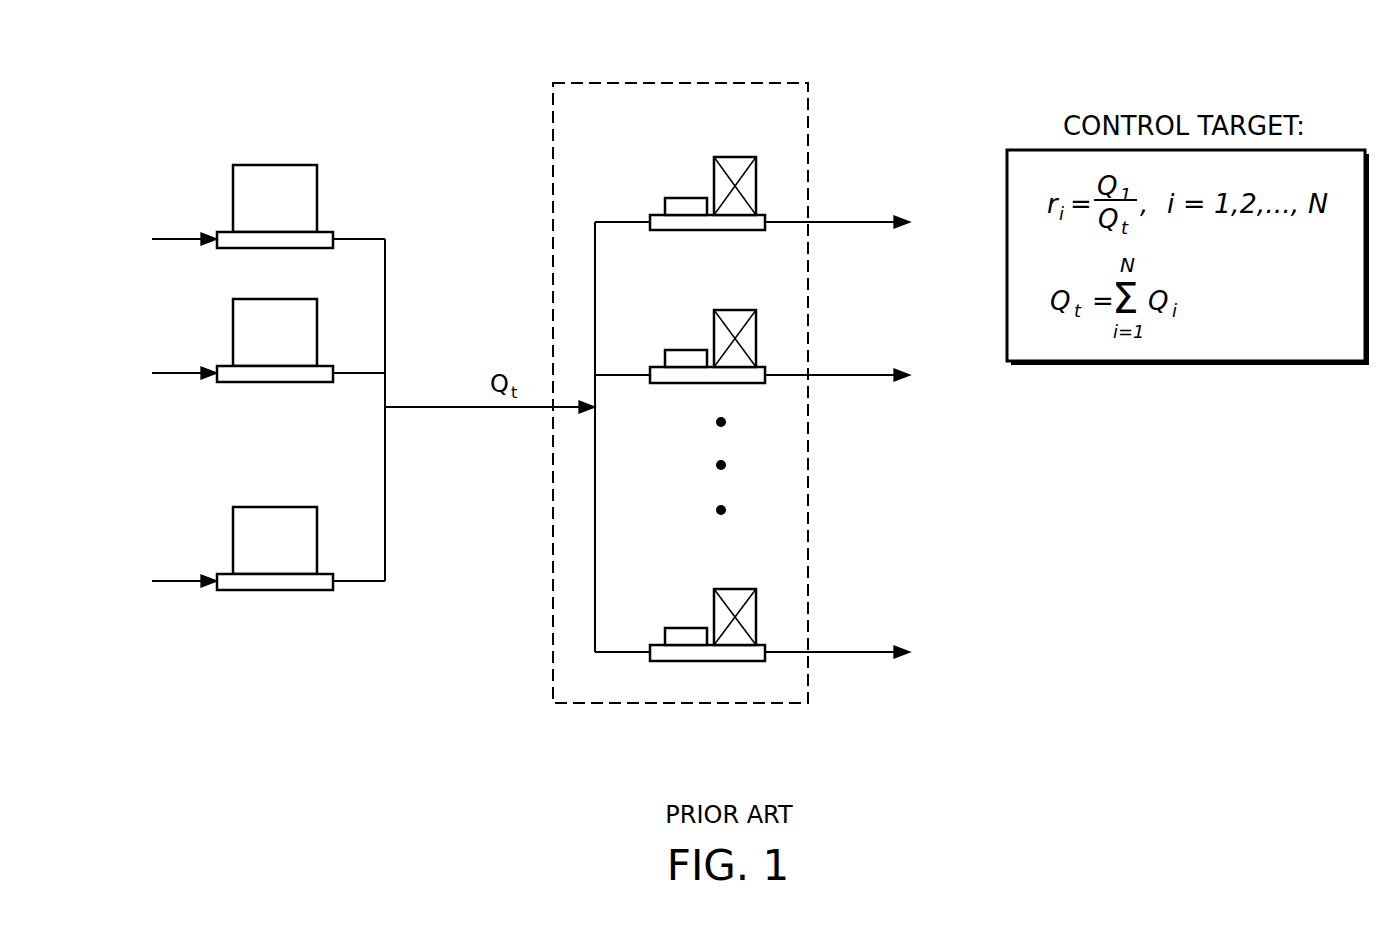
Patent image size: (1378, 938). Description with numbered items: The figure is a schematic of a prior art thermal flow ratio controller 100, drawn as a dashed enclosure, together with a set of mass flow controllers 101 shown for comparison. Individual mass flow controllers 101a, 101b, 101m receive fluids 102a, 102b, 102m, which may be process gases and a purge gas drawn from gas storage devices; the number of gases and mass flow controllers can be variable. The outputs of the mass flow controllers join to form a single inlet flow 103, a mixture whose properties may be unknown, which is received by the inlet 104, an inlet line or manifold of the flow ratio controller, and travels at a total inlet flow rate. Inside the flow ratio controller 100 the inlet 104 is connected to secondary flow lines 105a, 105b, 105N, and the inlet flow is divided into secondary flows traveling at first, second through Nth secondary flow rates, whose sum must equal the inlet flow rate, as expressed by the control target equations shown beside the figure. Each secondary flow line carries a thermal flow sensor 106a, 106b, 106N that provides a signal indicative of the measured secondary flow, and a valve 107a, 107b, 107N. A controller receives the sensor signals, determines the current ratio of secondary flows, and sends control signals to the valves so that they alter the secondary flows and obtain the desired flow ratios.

The flow ratio controller 100 is at (568, 50).
The set of mass flow controllers 101 is at (218, 110).
The mass flow controller 101a is at (248, 213).
The mass flow controller 101b is at (248, 347).
The mass flow controller 101m is at (246, 555).
The fluid 102a is at (170, 239).
The fluid 102b is at (170, 373).
The fluid 102m is at (170, 581).
The inlet flow 103 is at (440, 403).
The inlet 104 is at (492, 417).
The secondary flow line 105a is at (879, 230).
The secondary flow line 105b is at (879, 383).
The secondary flow line 105N is at (879, 660).
The flow sensor 106a is at (688, 198).
The flow sensor 106b is at (688, 350).
The flow sensor 106N is at (688, 628).
The valve 107a is at (732, 157).
The valve 107b is at (732, 310).
The valve 107N is at (732, 589).